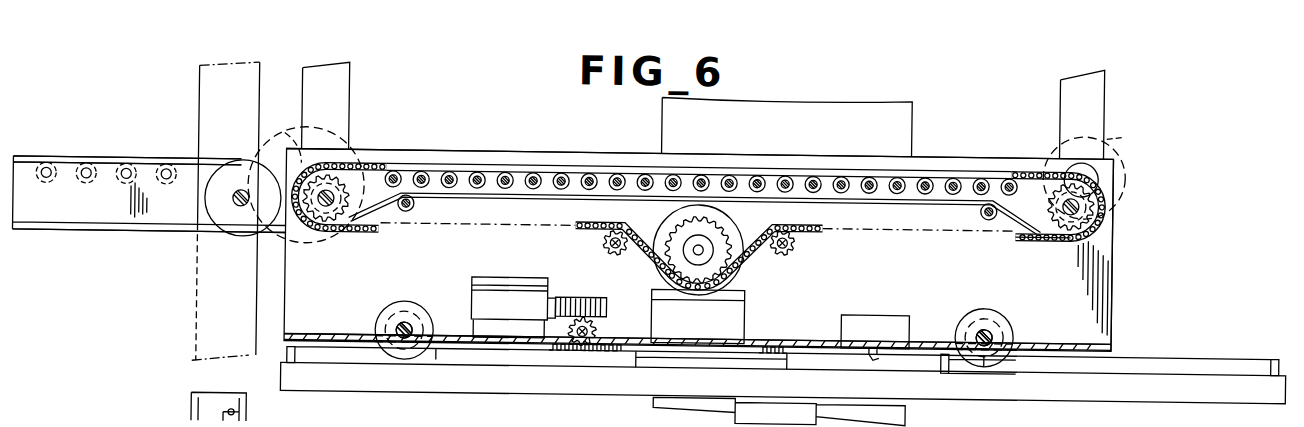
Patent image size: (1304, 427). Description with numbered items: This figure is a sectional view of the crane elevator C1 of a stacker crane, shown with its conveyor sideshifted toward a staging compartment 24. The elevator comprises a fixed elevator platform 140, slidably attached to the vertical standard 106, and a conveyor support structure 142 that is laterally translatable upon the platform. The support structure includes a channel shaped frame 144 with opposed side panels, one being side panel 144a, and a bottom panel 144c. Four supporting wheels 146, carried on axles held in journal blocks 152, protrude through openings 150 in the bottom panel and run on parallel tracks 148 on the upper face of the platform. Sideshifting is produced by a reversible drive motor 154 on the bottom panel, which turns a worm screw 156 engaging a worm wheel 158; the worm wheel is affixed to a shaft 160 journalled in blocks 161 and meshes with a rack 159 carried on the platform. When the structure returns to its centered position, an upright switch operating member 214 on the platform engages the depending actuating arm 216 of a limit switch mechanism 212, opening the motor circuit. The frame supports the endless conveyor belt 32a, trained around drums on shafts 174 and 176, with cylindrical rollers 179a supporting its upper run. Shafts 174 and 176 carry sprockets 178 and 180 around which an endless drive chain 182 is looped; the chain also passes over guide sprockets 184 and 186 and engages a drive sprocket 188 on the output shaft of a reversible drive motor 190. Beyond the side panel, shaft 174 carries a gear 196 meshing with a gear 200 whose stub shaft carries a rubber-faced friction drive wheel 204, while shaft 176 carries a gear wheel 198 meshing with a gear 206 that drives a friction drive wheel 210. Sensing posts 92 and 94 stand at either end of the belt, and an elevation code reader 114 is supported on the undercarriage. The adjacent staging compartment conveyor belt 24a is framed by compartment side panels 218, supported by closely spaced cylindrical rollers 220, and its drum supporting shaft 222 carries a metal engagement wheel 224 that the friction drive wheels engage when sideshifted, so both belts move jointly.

The staging compartment 24 is at (80, 75).
The conveyor belt 24a is at (58, 164).
The cylindrical rollers 220 is at (46, 199).
The engagement wheel 224 is at (212, 204).
The compartment side panels 218 is at (26, 236).
The drum supporting shaft 222 is at (237, 194).
The gear 200 is at (300, 168).
The friction drive wheel 204 is at (283, 138).
The gear 196 is at (262, 239).
The sensing post 92 is at (323, 78).
The sensing post 94 is at (1072, 77).
The endless drive chain 182 is at (362, 169).
The endless conveyor belt 32a is at (425, 163).
The cylindrical rollers 179a is at (588, 176).
The vertical standard 106 is at (772, 136).
The crane elevator C1 is at (946, 122).
The shaft 174 is at (321, 228).
The sprocket 178 is at (352, 243).
The guide sprocket 184 is at (600, 242).
The guide sprocket 186 is at (800, 247).
The drive sprocket 188 is at (718, 232).
The reversible drive motor 190 is at (738, 269).
The shaft 176 is at (1080, 197).
The sprocket 180 is at (1082, 223).
The gear wheel 198 is at (1115, 179).
The gear 206 is at (1112, 152).
The friction drive wheel 210 is at (1105, 134).
The frame 144 is at (1122, 257).
The conveyor support structure 142 is at (1122, 281).
The side panel 144a is at (958, 276).
The bottom panel 144c is at (1095, 343).
The supporting wheels 146 is at (395, 309).
The journal blocks 152 is at (378, 320).
The tracks 148 is at (360, 370).
The openings 150 is at (437, 361).
The elevator platform 140 is at (478, 398).
The reversible drive motor 154 is at (487, 281).
The worm screw 156 is at (572, 297).
The worm wheel 158 is at (592, 329).
The rack 159 is at (760, 362).
The shaft 160 is at (596, 319).
The blocks 161 is at (542, 357).
The limit switch mechanism 212 is at (858, 343).
The switch operating member 214 is at (948, 362).
The actuating arm 216 is at (885, 357).
The elevation code reader 114 is at (759, 422).